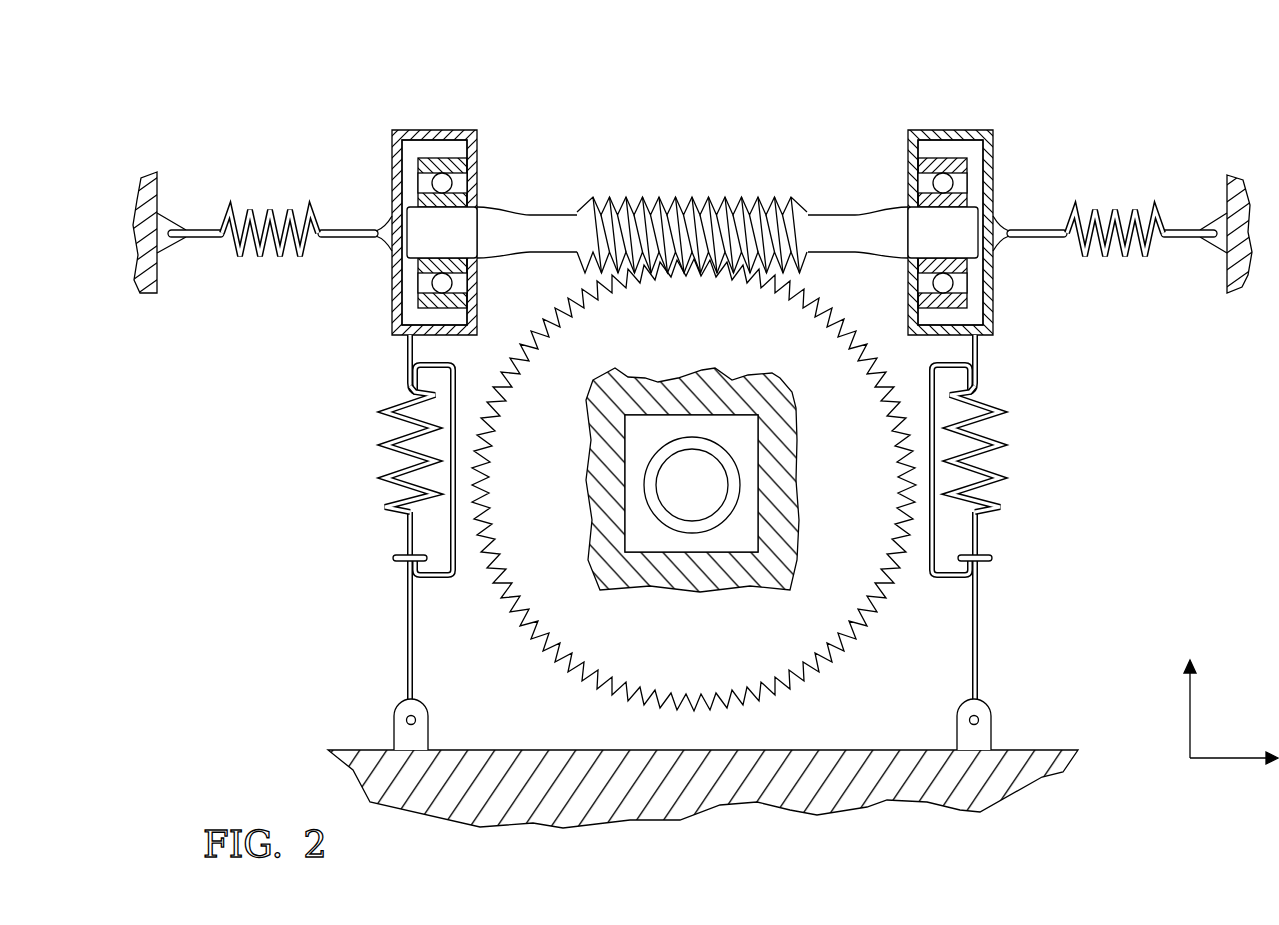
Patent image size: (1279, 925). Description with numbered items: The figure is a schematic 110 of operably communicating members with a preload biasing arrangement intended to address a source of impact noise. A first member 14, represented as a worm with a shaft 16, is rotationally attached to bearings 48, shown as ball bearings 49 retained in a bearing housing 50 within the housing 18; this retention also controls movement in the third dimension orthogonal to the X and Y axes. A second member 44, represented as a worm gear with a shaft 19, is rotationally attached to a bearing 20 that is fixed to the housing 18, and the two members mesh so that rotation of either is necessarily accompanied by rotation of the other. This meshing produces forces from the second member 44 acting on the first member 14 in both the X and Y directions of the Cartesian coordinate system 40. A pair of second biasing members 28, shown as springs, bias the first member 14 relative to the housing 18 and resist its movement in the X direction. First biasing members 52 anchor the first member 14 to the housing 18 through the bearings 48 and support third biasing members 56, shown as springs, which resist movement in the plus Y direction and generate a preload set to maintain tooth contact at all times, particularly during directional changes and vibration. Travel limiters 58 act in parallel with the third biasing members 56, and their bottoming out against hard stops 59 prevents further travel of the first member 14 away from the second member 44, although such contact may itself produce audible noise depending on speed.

The schematic 110 is at (927, 71).
The first member 14 is at (775, 200).
The shaft 16 is at (998, 206).
The housing 18 is at (157, 192).
The shaft 19 is at (723, 455).
The bearing 20 is at (637, 530).
The second biasing members 28 is at (283, 212).
The Cartesian coordinate system 40 is at (1222, 758).
The second member 44 is at (825, 669).
The bearings 48 is at (480, 160).
The ball bearings 49 is at (428, 158).
The bearing housing 50 is at (392, 170).
The first biasing members 52 is at (405, 583).
The third biasing members 56 is at (388, 463).
The travel limiters 58 is at (455, 563).
The hard stops 59 is at (395, 558).